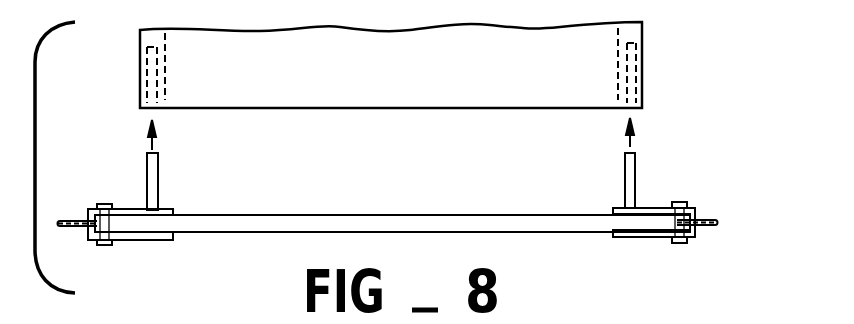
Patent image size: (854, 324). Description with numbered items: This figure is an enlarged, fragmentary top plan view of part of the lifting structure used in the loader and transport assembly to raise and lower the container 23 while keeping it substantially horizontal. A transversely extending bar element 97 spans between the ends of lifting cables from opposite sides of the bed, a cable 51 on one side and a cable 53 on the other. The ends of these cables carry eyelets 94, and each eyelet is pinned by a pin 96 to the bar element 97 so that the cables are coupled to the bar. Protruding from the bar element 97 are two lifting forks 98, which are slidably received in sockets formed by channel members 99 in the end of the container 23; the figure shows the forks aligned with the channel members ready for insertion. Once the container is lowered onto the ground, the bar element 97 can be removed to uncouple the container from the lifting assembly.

The container 23 is at (642, 33).
The channel members 99 is at (643, 115).
The lifting forks 98 is at (158, 178).
The bar element 97 is at (368, 233).
The eyelets 94 is at (112, 223).
The pins 96 is at (103, 205).
The cable 51 is at (68, 227).
The cable 53 is at (712, 228).